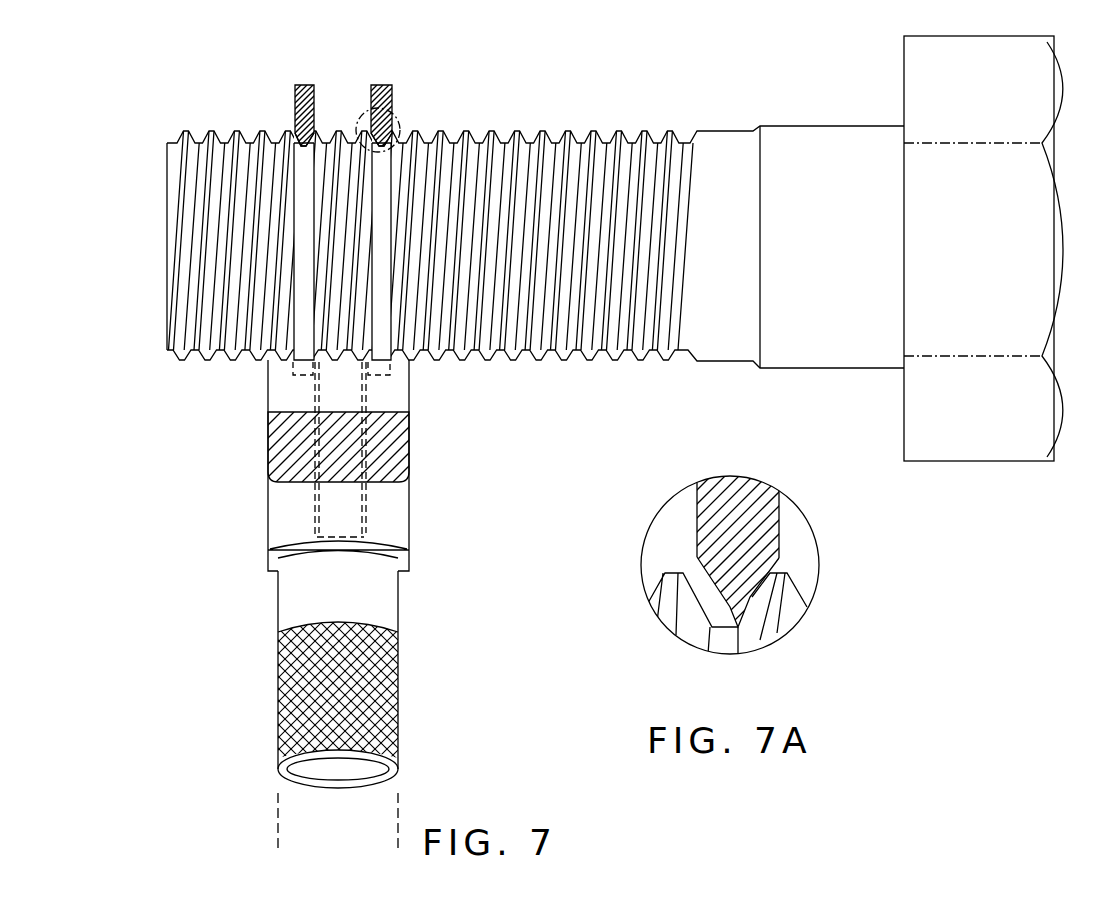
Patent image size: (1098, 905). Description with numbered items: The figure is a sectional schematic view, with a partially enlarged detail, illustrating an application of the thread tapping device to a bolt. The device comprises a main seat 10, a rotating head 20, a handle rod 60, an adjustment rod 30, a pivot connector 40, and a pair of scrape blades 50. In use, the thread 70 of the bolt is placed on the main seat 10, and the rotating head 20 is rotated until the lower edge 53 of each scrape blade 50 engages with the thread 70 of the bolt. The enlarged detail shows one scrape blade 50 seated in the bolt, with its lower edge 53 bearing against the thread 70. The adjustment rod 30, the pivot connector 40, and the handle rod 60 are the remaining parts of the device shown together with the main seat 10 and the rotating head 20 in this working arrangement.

The main seat 10 is at (402, 523).
The rotating head 20 is at (288, 688).
The adjustment rod 30 is at (318, 450).
The pivot connector 40 is at (366, 300).
The scrape blade 50 is at (302, 84).
The lower edge 53 is at (293, 132).
The handle rod 60 is at (292, 835).
The thread 70 is at (308, 138).